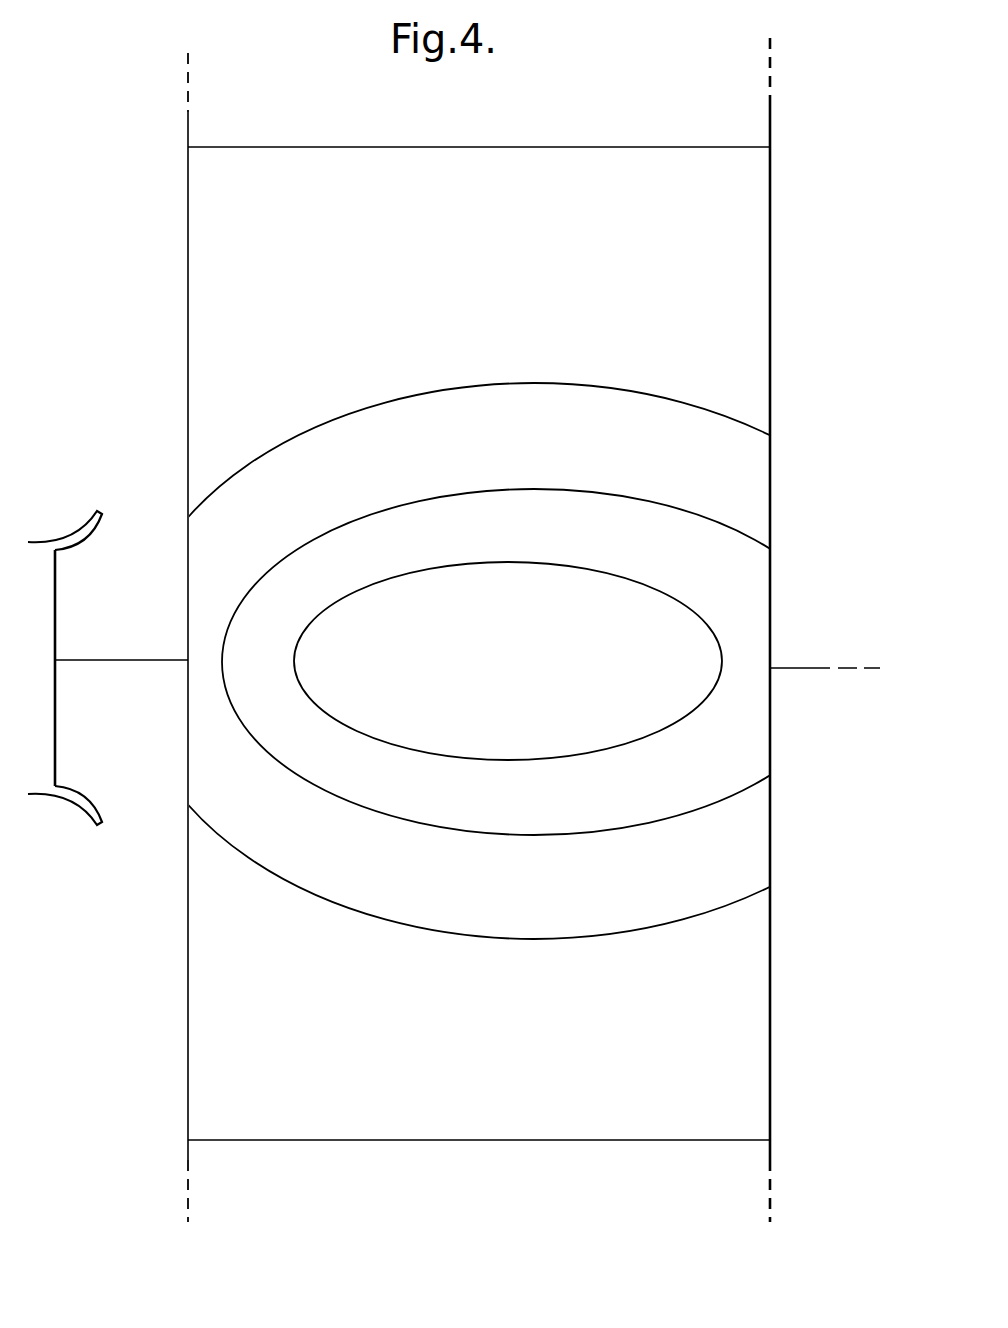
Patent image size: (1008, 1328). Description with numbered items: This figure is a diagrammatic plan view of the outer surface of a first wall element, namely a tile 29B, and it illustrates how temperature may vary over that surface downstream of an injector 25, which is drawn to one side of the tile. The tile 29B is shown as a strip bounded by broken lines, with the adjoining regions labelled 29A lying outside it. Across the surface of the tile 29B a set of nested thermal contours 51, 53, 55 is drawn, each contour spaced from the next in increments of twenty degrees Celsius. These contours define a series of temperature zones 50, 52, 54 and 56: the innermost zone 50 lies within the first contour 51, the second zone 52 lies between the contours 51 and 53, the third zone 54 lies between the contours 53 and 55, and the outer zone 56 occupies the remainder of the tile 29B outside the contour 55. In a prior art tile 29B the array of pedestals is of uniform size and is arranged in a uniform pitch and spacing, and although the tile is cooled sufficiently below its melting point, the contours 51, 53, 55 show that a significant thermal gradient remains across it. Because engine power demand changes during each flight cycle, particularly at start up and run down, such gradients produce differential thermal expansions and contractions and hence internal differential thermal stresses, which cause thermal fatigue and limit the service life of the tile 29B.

The injector 25 is at (47, 572).
The outer region of road surface 29A is at (118, 203).
The tile 29B is at (327, 252).
The temperature zone 50 is at (558, 661).
The thermal contour 51 is at (705, 613).
The temperature zone 52 is at (534, 662).
The thermal contour 53 is at (748, 787).
The temperature zone 54 is at (534, 661).
The thermal contour 55 is at (732, 907).
The temperature zone 56 is at (550, 1007).